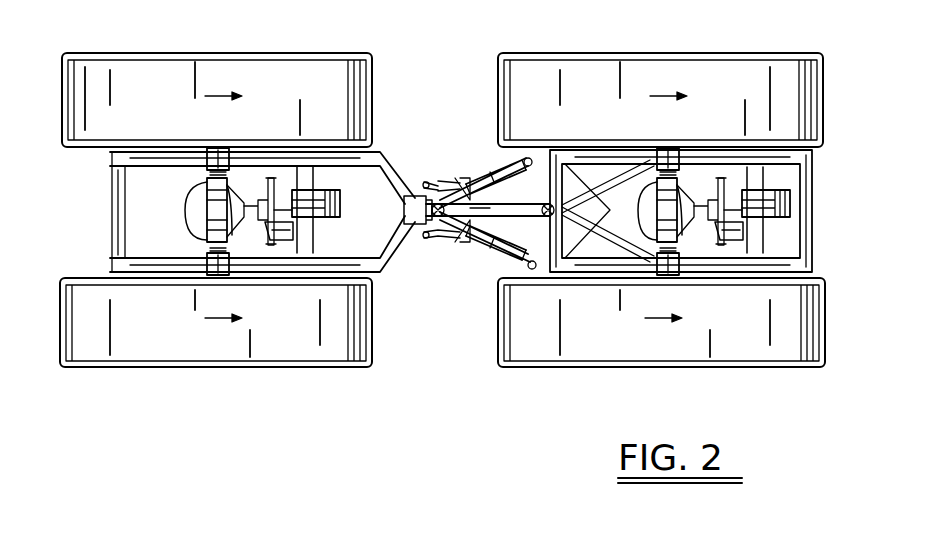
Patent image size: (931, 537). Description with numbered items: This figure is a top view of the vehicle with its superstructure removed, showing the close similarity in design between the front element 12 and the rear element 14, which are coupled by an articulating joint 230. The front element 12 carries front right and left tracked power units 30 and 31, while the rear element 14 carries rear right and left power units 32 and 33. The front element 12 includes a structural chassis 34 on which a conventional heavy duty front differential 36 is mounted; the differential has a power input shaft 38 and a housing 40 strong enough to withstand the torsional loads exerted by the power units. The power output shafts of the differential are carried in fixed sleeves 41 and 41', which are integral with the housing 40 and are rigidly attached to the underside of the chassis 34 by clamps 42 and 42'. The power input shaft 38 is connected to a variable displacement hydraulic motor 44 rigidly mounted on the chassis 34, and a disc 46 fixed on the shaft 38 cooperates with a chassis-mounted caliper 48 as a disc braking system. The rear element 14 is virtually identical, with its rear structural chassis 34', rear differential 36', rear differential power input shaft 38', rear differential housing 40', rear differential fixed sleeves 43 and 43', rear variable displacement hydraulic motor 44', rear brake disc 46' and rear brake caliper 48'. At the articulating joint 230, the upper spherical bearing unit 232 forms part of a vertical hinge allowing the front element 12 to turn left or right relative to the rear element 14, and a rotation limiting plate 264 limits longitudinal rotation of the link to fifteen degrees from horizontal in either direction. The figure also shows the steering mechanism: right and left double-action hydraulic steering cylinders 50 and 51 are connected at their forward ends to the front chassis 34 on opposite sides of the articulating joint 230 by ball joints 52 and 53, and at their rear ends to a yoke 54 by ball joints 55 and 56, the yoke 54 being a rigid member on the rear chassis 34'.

The front element 12 is at (858, 160).
The rear element 14 is at (50, 198).
The front right tracked power unit 30 is at (770, 350).
The front left tracked power unit 31 is at (745, 63).
The rear right power unit 32 is at (315, 348).
The rear left power unit 33 is at (112, 66).
The structural chassis 34 is at (700, 211).
The rear structural chassis 34' is at (235, 212).
The front differential 36 is at (648, 213).
The rear differential 36' is at (192, 212).
The power input shaft 38 is at (727, 180).
The rear differential power input shaft 38' is at (278, 180).
The differential housing 40 is at (690, 215).
The rear differential housing 40' is at (214, 209).
The fixed sleeve 41 is at (699, 294).
The fixed sleeve 41' is at (683, 139).
The clamp 42 is at (657, 282).
The clamp 42' is at (649, 140).
The rear differential fixed sleeve 43 is at (222, 282).
The rear differential fixed sleeve 43' is at (198, 140).
The variable displacement hydraulic motor 44 is at (785, 206).
The rear variable displacement hydraulic motor 44' is at (315, 223).
The disc 46 is at (742, 184).
The rear brake disc 46' is at (292, 184).
The caliper 48 is at (737, 269).
The rear brake caliper 48' is at (280, 269).
The right double-action hydraulic steering cylinder 50 is at (495, 262).
The left double-action hydraulic steering cylinder 51 is at (493, 172).
The ball joint 52 is at (530, 268).
The ball joint 53 is at (525, 160).
The yoke 54 is at (412, 250).
The ball joint 55 is at (427, 240).
The ball joint 56 is at (427, 183).
The articulating joint 230 is at (443, 298).
The upper spherical bearing unit 232 is at (410, 213).
The rotation limiting plate 264 is at (462, 185).